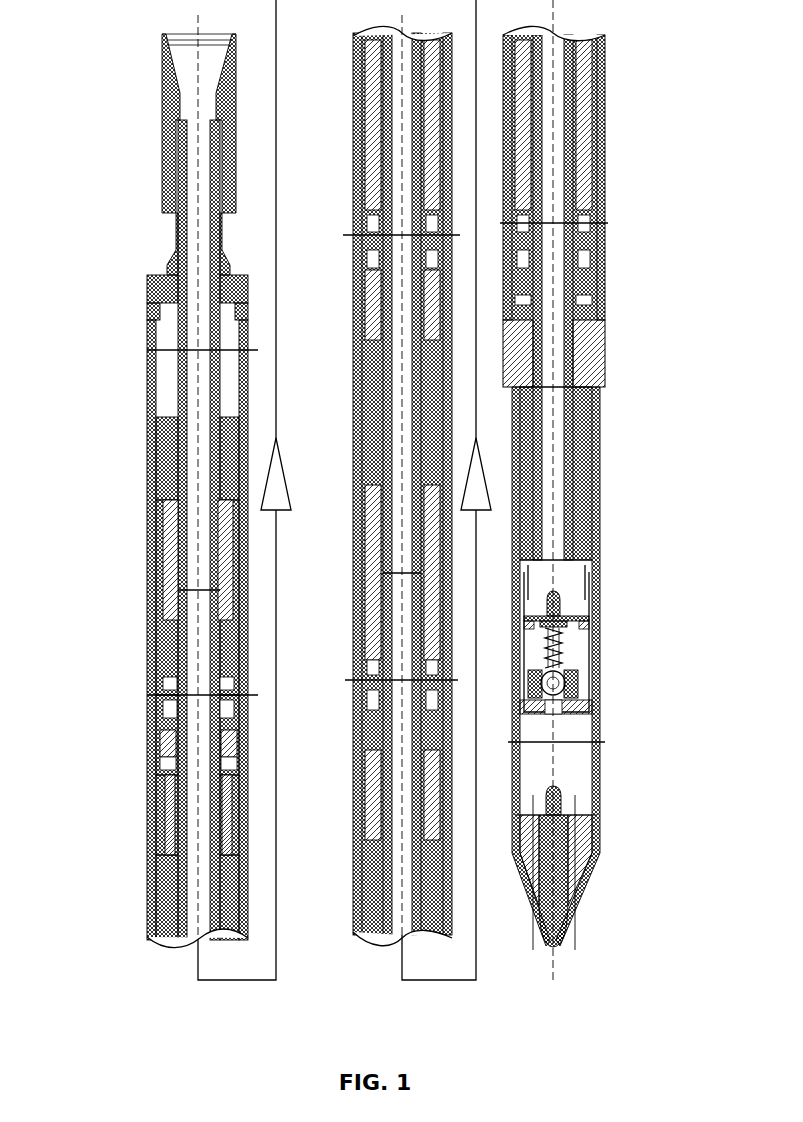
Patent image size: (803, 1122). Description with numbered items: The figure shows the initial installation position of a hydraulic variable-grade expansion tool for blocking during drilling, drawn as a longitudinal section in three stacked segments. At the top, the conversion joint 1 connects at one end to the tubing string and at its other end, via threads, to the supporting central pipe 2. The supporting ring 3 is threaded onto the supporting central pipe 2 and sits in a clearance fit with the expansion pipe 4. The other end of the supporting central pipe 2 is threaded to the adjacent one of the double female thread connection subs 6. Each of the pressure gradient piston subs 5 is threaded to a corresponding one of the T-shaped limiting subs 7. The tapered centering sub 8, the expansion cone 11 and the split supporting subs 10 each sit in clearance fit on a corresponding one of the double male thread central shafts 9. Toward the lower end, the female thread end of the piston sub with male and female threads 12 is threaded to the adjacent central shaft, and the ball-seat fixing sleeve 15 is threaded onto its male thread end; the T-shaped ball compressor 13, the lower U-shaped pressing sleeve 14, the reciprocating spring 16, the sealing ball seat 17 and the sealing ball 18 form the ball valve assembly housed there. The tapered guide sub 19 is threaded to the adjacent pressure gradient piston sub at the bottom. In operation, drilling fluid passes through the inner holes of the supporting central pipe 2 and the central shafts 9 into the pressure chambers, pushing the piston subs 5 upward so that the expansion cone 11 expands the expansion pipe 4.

The conversion joint 1 is at (177, 160).
The supporting central pipe 2 is at (170, 247).
The supporting ring 3 is at (147, 280).
The expansion pipe 4 is at (148, 352).
The pressure gradient piston subs 5 is at (158, 470).
The double female thread connection subs 6 is at (158, 570).
The T-shaped limiting subs 7 is at (156, 732).
The tapered centering sub 8 is at (157, 813).
The double male thread central shafts 9 is at (158, 870).
The split supporting subs 10 is at (355, 345).
The expansion cone 11 is at (596, 330).
The piston sub with male and female threads 12 is at (557, 592).
The T-shaped ball compressor 13 is at (582, 558).
The lower U-shaped pressing sleeve 14 is at (590, 610).
The ball-seat fixing sleeve 15 is at (590, 620).
The reciprocating spring 16 is at (562, 648).
The sealing ball seat 17 is at (578, 688).
The sealing ball 18 is at (590, 712).
The tapered guide sub 19 is at (596, 874).